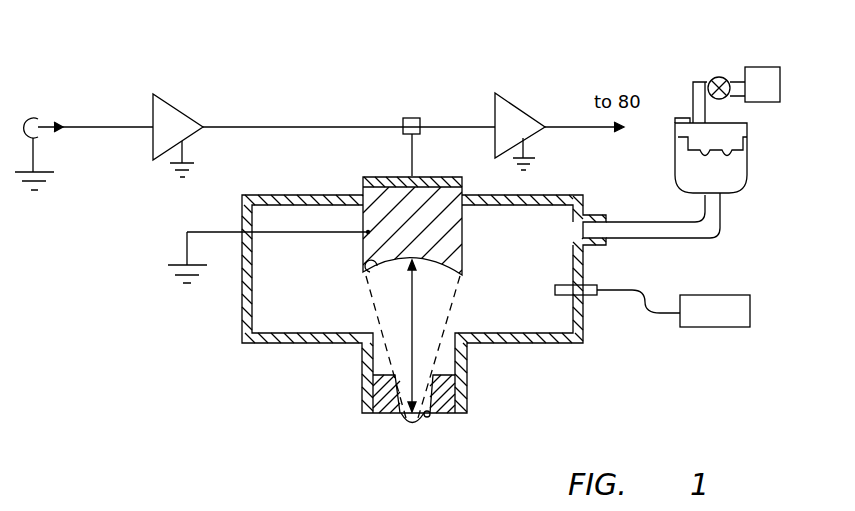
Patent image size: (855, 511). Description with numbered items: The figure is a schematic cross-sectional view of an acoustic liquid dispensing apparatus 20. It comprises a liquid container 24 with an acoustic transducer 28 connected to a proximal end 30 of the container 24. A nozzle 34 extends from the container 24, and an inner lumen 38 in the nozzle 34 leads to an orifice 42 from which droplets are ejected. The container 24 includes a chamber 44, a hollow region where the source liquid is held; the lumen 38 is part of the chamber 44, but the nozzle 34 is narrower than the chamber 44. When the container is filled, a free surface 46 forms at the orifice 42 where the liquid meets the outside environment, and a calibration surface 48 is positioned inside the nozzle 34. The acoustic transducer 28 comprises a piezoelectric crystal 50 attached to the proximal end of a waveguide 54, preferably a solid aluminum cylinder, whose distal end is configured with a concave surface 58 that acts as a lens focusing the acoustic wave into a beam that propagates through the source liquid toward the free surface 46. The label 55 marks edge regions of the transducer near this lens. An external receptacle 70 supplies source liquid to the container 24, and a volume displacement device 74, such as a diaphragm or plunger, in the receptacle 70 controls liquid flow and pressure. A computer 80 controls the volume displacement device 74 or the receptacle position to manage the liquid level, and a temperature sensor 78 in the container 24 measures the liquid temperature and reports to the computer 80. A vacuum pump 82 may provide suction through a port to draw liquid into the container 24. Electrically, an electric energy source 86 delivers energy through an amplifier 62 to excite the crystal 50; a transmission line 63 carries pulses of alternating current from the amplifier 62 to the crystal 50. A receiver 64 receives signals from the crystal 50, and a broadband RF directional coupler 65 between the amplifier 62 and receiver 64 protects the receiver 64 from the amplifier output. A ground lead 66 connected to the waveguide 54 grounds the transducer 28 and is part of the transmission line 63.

The acoustic liquid dispensing apparatus 20 is at (208, 328).
The liquid container 24 is at (587, 268).
The acoustic transducer 28 is at (474, 214).
The proximal end 30 is at (277, 195).
The nozzle 34 is at (363, 351).
The inner lumen 38 is at (421, 358).
The orifice 42 is at (429, 421).
The chamber 44 is at (549, 297).
The free surface 46 is at (402, 421).
The calibration surface 48 is at (368, 373).
The piezoelectric crystal 50 is at (368, 177).
The waveguide 54 is at (370, 258).
The cathode edges 55 is at (372, 295).
The concave surface 58 is at (375, 275).
The amplifier 62 is at (175, 105).
The transmission line 63 is at (414, 146).
The receiver 64 is at (515, 103).
The broadband RF directional coupler 65 is at (411, 117).
The ground lead 66 is at (187, 232).
The external receptacle 70 is at (735, 196).
The volume displacement device 74 is at (733, 118).
The temperature sensor 78 is at (600, 297).
The computer 80 is at (752, 317).
The vacuum pump 82 is at (782, 85).
The electric energy source 86 is at (37, 125).